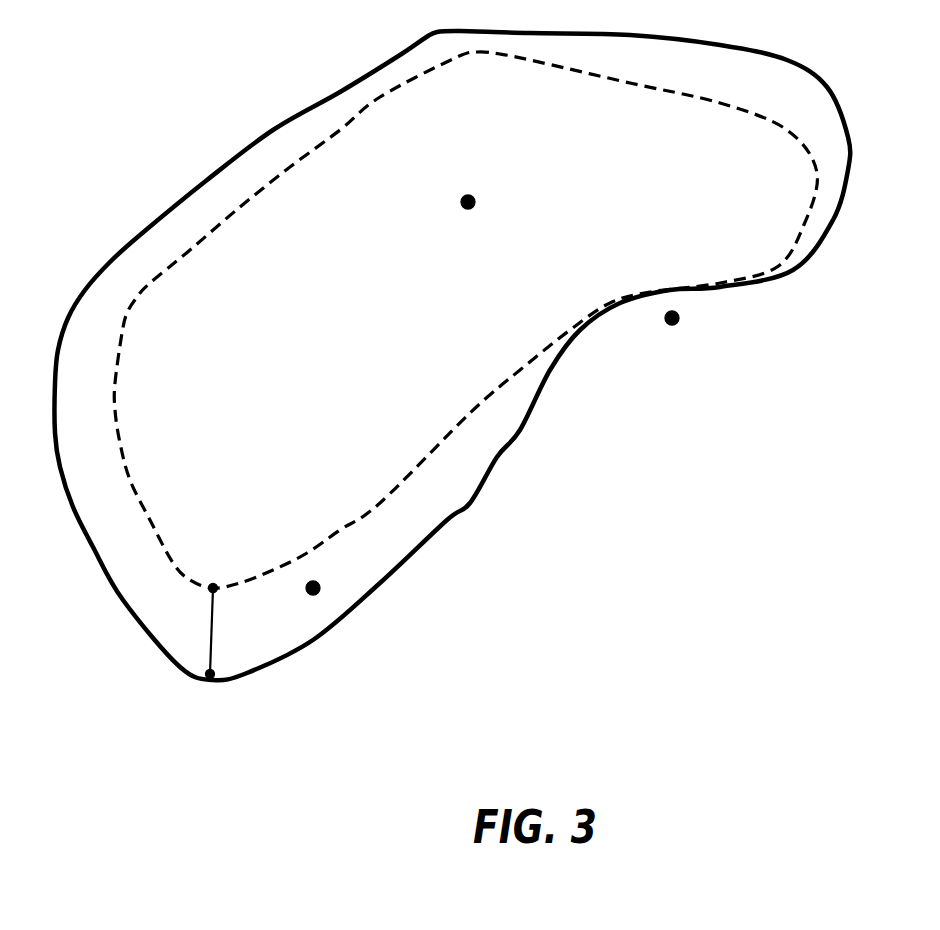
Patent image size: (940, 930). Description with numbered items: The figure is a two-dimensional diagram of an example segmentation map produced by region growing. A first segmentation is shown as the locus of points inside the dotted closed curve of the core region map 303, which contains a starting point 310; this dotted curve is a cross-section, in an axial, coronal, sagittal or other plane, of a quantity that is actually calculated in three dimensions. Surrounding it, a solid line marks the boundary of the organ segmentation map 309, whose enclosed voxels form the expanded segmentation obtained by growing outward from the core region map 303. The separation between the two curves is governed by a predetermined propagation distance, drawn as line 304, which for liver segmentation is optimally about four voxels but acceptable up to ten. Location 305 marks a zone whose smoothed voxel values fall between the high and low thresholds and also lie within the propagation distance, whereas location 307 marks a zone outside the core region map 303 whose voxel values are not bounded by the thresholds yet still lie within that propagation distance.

The core region map 303 is at (122, 441).
The line indicating propagation distance 304 is at (215, 658).
The location 305 is at (319, 583).
The location 307 is at (665, 321).
The organ segmentation map 309 is at (847, 121).
The starting point 310 is at (461, 203).